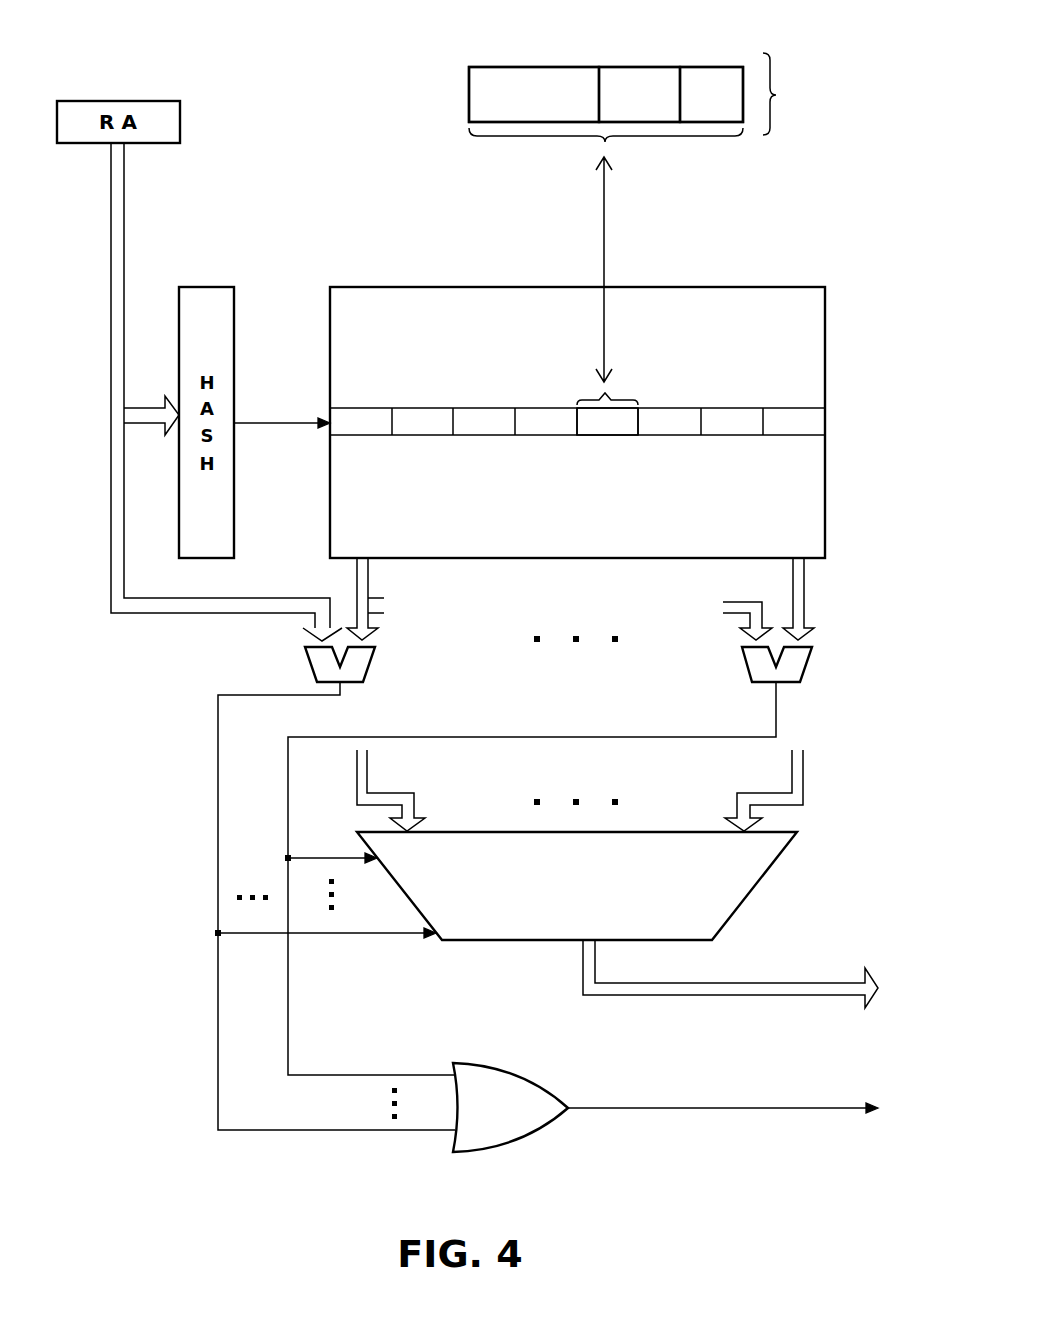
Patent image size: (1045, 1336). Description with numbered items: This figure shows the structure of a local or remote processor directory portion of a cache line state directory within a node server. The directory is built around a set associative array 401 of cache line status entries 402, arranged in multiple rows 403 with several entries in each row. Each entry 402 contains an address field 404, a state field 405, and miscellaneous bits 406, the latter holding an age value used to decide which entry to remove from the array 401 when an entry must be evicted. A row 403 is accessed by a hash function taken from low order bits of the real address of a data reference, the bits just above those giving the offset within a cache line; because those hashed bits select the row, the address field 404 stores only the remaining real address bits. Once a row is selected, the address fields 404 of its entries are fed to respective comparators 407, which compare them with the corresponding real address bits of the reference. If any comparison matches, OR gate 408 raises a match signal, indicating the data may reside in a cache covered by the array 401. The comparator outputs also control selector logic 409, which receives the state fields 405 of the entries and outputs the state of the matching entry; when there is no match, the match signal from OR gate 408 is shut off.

The set associative array 401 is at (750, 336).
The cache line status entry 402 is at (650, 255).
The row 403 is at (846, 423).
The address field 404 is at (509, 66).
The state field 405 is at (612, 66).
The miscellaneous bits 406 is at (692, 66).
The comparator 407 is at (835, 613).
The OR gate 408 is at (486, 1113).
The selector logic 409 is at (693, 877).